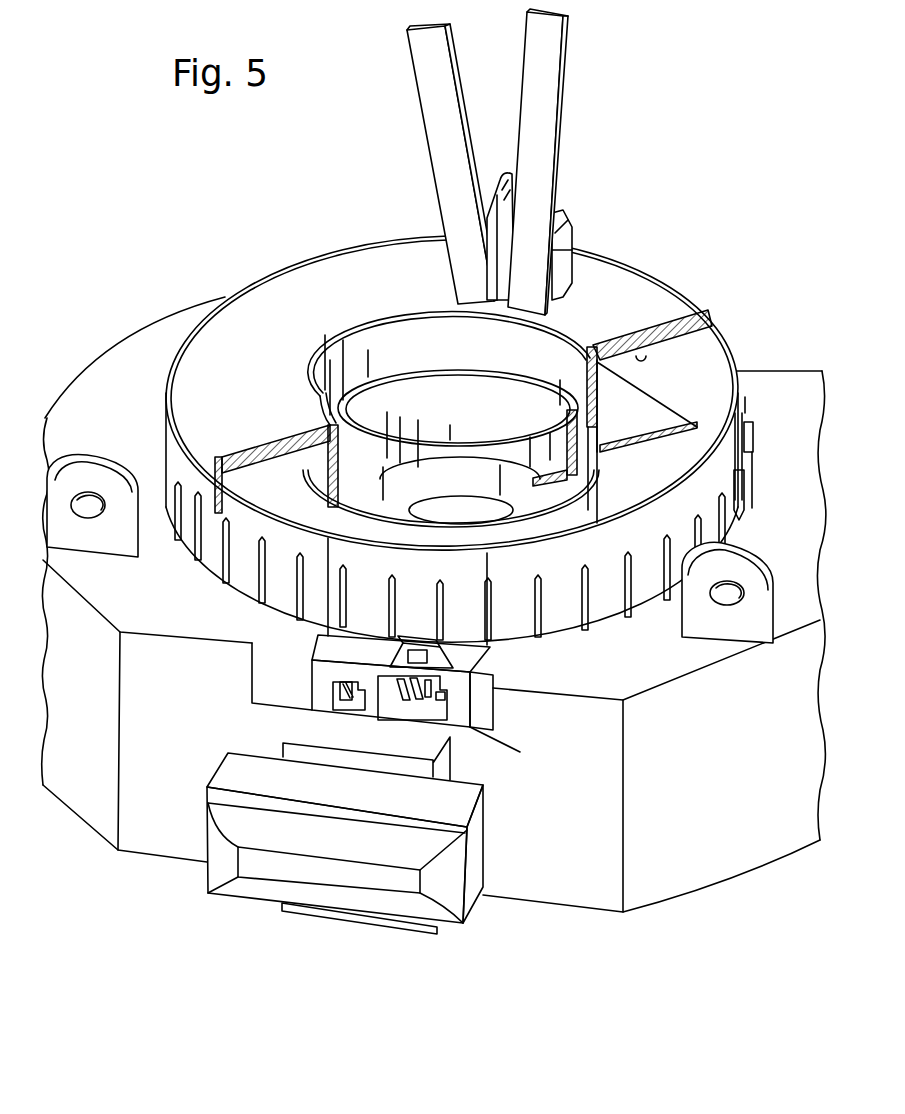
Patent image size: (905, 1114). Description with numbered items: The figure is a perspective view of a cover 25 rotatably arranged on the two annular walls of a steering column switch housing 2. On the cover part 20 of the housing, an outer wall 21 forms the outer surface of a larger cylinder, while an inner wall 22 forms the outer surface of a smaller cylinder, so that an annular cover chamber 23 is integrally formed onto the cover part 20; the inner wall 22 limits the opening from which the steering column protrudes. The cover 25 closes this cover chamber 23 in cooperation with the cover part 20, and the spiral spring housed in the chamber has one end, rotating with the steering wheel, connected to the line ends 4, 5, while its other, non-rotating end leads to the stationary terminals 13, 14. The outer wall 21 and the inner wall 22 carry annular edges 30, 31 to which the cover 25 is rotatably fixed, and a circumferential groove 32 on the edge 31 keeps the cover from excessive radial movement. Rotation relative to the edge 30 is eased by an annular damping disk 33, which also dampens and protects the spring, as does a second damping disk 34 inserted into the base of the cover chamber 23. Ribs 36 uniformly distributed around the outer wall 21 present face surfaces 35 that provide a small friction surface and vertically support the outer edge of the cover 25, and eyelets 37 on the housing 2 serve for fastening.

The switch housing 2 is at (693, 882).
The line end 4 is at (426, 103).
The line end 5 is at (547, 105).
The stationary terminal 13 is at (340, 705).
The stationary terminal 14 is at (420, 712).
The cover part 20 is at (790, 383).
The outer wall 21 is at (600, 608).
The inner wall 22 is at (593, 495).
The cover chamber 23 is at (652, 378).
The cover 25 is at (642, 287).
The annular edge 30 is at (253, 497).
The annular edge 31 is at (428, 520).
The circumferential groove 32 is at (567, 437).
The annular damping disk 33 is at (645, 352).
The second damping disk 34 is at (637, 445).
The face surface 35 is at (755, 436).
The rib 36 is at (750, 468).
The eyelet 37 is at (88, 478).